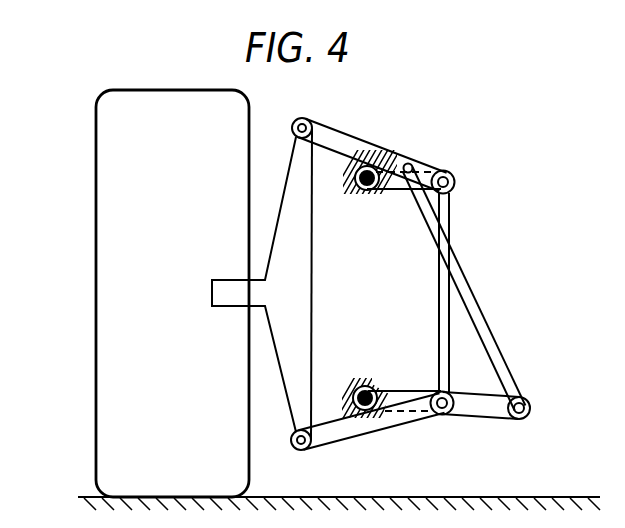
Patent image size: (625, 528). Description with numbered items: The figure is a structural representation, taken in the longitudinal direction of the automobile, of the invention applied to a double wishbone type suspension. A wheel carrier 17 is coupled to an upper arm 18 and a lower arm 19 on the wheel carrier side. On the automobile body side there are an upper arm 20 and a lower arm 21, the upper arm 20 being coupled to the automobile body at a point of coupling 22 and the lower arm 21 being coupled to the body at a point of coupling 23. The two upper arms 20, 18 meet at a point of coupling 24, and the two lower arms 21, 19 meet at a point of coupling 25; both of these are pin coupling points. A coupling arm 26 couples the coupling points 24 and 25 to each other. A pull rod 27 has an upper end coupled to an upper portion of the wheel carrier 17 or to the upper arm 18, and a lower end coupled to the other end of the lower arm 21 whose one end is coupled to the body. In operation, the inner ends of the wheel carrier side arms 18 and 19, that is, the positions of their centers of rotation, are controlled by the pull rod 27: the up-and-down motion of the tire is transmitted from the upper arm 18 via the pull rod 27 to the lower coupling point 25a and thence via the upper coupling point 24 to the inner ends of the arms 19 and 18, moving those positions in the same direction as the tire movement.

The wheel carrier 17 is at (276, 227).
The upper arm 18 is at (356, 134).
The lower arm 19 is at (354, 432).
The upper arm 20 is at (393, 189).
The lower arm 21 is at (402, 391).
The point of coupling 22 is at (362, 190).
The point of coupling 23 is at (361, 386).
The point of coupling 24 is at (452, 174).
The point of coupling 25 is at (453, 415).
The lower coupling point 25a is at (528, 419).
The coupling arm 26 is at (450, 207).
The pull rod 27 is at (489, 328).